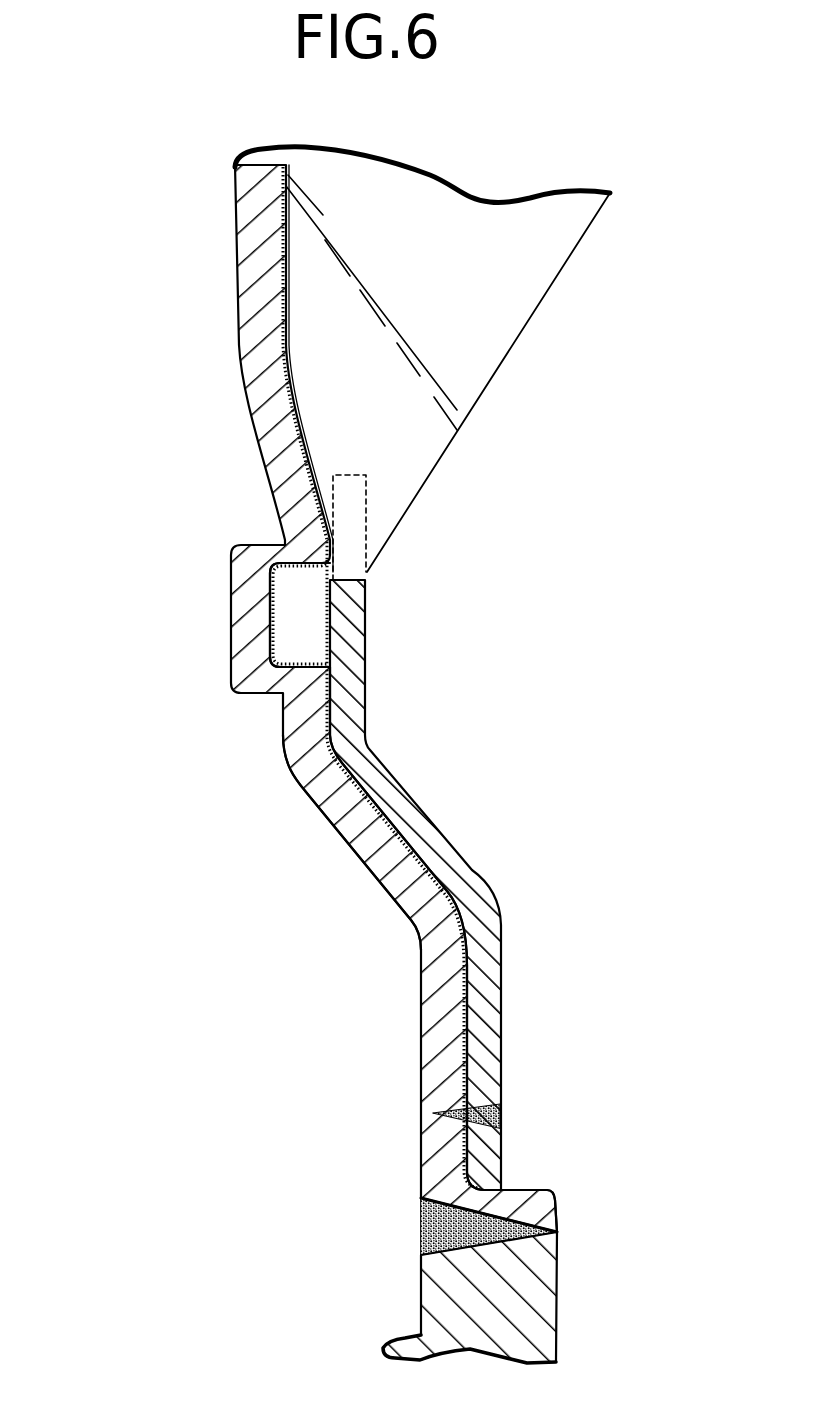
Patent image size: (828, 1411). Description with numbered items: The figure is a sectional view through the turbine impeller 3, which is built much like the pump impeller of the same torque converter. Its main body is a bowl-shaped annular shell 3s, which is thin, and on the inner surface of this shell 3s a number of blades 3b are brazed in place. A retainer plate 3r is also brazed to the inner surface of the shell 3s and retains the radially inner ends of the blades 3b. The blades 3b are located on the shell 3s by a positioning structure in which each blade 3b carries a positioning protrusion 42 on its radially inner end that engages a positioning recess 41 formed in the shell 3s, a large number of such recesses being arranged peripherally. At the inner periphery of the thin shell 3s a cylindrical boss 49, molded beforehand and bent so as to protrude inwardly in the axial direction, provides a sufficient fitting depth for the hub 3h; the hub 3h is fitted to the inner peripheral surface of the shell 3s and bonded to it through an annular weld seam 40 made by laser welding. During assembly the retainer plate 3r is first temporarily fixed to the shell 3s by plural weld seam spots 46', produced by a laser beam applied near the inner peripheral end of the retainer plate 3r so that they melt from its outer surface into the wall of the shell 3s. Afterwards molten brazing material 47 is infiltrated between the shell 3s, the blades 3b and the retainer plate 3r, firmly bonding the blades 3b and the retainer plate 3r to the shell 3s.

The turbine impeller 3 is at (212, 284).
The shell 3s is at (240, 377).
The blade 3b is at (495, 310).
The retainer plate 3r is at (437, 835).
The hub 3h is at (537, 1297).
The positioning recess 41 is at (273, 613).
The positioning protrusion 42 is at (310, 635).
The brazing material 47 is at (348, 580).
The weld seam spot 46' is at (418, 1086).
The annular weld seam 40 is at (421, 1232).
The cylindrical boss 49 is at (540, 1195).